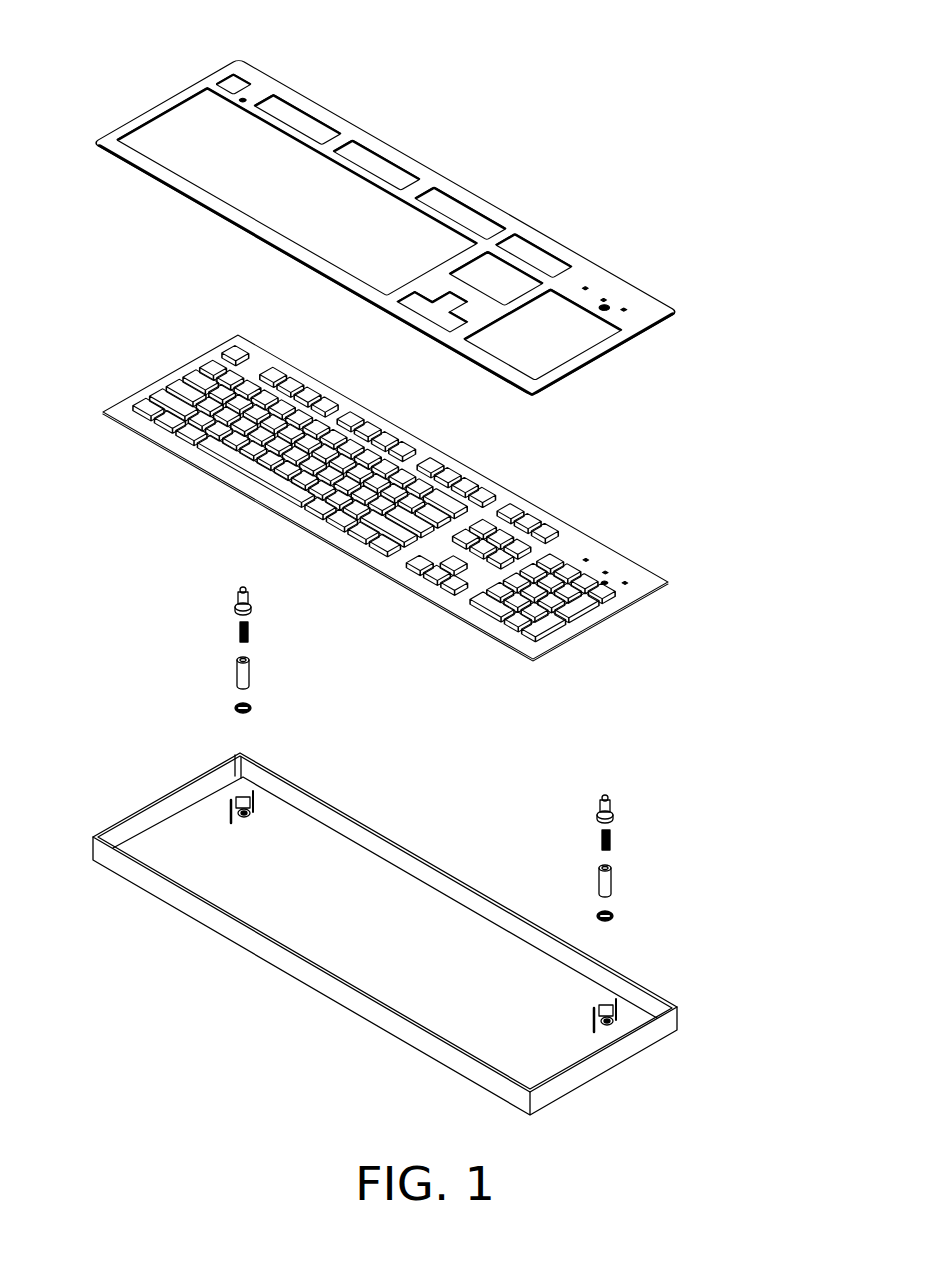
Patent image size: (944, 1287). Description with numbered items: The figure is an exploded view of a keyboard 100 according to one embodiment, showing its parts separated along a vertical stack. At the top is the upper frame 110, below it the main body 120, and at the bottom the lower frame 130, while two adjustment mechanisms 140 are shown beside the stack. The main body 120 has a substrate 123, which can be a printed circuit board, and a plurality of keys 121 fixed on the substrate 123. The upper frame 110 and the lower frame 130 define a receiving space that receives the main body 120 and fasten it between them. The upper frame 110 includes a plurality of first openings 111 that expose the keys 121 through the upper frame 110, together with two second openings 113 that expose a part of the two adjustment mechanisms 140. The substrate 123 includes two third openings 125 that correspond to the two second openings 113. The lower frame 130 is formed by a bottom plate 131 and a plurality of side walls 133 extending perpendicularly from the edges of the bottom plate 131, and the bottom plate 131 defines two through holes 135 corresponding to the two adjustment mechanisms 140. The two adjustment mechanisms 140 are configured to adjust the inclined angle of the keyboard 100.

The keyboard 100 is at (386, 39).
The upper frame 110 is at (523, 200).
The first openings 111 is at (376, 165).
The second openings 113 is at (604, 308).
The main body 120 is at (576, 501).
The keys 121 is at (481, 497).
The substrate 123 is at (605, 571).
The third openings 125 is at (605, 582).
The lower frame 130 is at (657, 959).
The bottom plate 131 is at (385, 897).
The side walls 133 is at (385, 976).
The through holes 135 is at (257, 810).
The adjustment mechanisms 140 is at (201, 631).